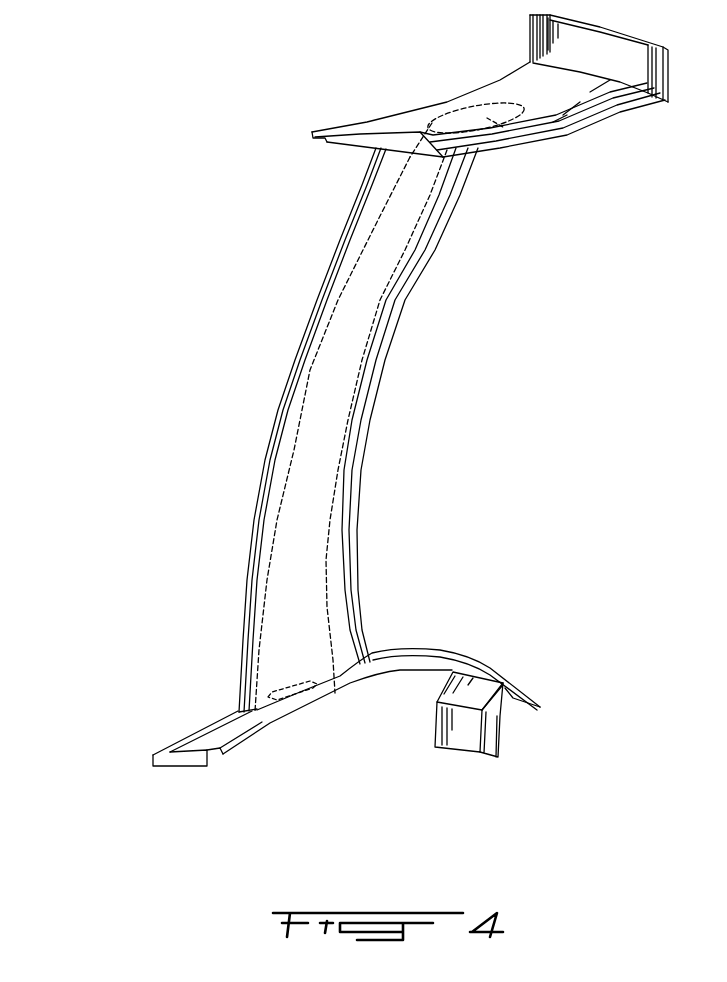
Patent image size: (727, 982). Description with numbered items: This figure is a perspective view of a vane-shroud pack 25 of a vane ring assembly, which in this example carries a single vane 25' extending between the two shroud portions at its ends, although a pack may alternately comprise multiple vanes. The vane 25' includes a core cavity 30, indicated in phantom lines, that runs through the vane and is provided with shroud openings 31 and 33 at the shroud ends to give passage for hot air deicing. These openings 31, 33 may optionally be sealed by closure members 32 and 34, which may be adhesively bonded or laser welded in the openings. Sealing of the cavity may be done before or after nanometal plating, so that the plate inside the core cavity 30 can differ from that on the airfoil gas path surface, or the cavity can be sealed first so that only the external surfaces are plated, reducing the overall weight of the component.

The vane-shroud pack 25 is at (368, 404).
The vane 25' is at (413, 420).
The core cavity 30 is at (262, 548).
The shroud opening 31 is at (317, 686).
The closure member 32 is at (274, 703).
The shroud opening 33 is at (453, 117).
The closure member 34 is at (507, 110).